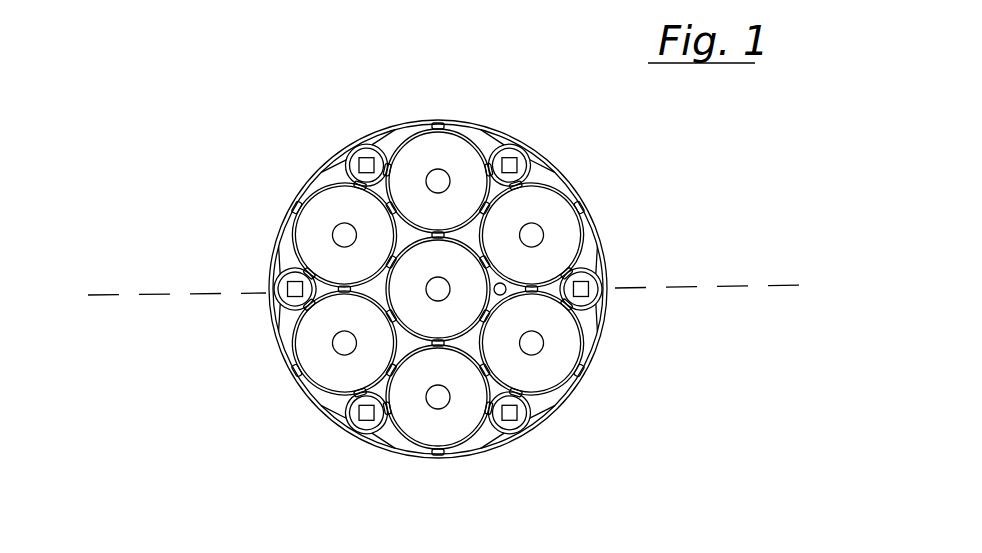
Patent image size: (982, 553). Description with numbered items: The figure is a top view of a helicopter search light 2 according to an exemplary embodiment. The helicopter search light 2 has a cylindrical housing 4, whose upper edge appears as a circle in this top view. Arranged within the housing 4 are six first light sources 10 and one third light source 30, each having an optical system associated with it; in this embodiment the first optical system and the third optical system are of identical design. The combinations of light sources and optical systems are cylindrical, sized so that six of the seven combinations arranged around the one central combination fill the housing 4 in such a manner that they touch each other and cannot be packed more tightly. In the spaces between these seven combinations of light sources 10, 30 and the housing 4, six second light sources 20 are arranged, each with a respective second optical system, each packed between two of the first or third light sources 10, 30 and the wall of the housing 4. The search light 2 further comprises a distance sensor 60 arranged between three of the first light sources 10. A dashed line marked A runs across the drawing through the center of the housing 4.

The helicopter search light 2 is at (688, 232).
The cylindrical housing 4 is at (282, 355).
The first light sources 10 is at (444, 178).
The second light sources 20 is at (362, 152).
The third light source 30 is at (487, 368).
The distance sensor 60 is at (509, 283).
The section axis A is at (790, 279).